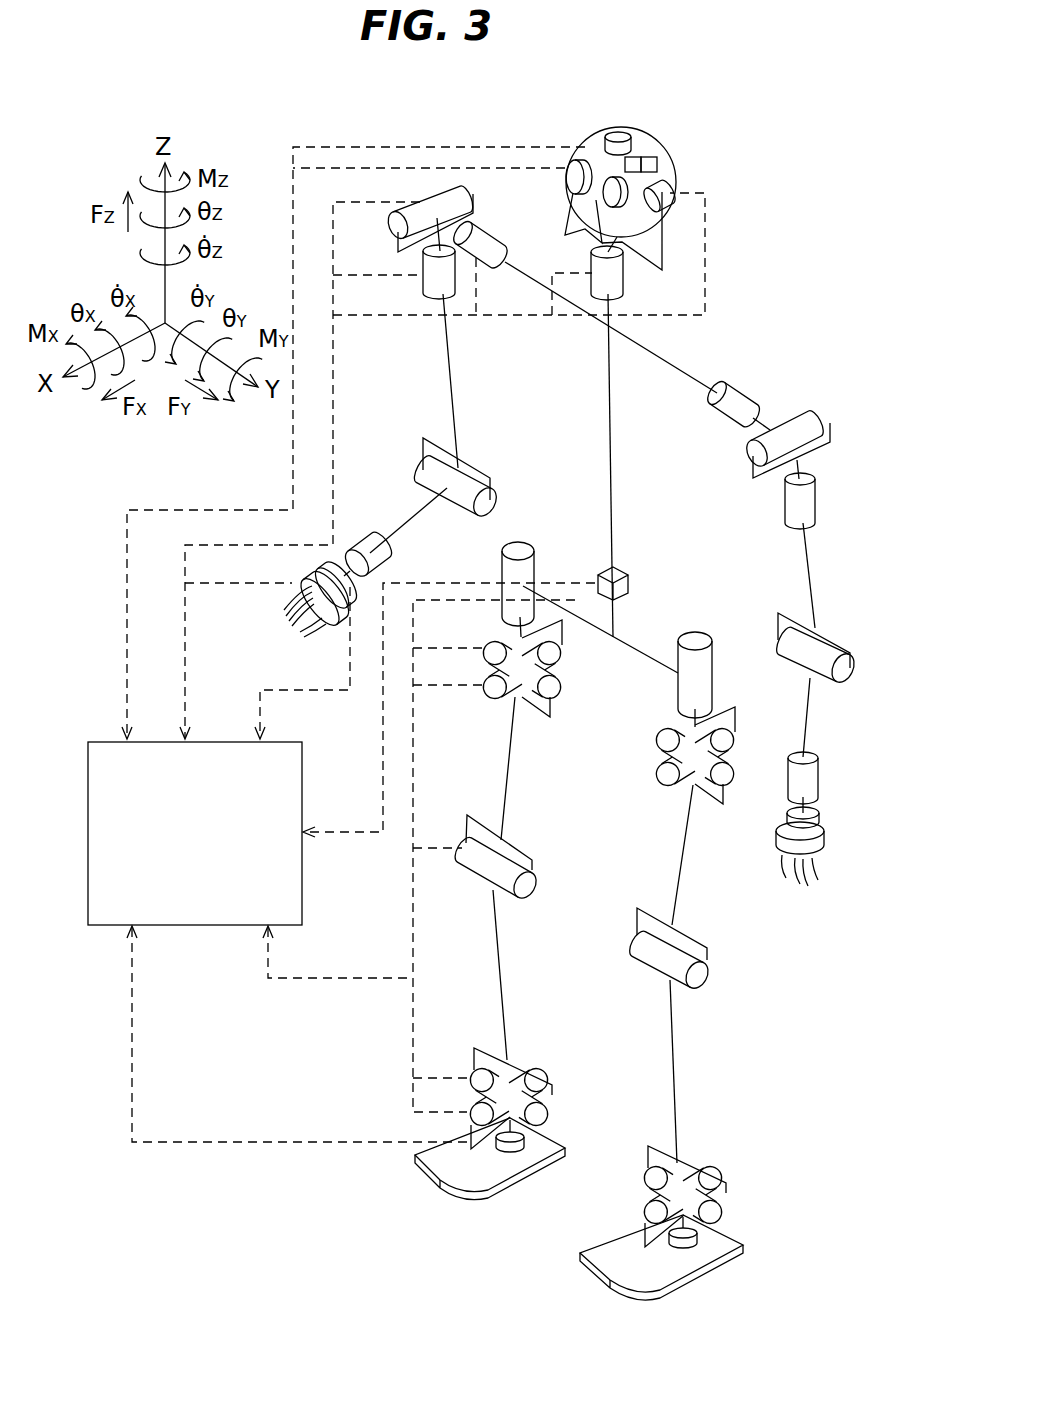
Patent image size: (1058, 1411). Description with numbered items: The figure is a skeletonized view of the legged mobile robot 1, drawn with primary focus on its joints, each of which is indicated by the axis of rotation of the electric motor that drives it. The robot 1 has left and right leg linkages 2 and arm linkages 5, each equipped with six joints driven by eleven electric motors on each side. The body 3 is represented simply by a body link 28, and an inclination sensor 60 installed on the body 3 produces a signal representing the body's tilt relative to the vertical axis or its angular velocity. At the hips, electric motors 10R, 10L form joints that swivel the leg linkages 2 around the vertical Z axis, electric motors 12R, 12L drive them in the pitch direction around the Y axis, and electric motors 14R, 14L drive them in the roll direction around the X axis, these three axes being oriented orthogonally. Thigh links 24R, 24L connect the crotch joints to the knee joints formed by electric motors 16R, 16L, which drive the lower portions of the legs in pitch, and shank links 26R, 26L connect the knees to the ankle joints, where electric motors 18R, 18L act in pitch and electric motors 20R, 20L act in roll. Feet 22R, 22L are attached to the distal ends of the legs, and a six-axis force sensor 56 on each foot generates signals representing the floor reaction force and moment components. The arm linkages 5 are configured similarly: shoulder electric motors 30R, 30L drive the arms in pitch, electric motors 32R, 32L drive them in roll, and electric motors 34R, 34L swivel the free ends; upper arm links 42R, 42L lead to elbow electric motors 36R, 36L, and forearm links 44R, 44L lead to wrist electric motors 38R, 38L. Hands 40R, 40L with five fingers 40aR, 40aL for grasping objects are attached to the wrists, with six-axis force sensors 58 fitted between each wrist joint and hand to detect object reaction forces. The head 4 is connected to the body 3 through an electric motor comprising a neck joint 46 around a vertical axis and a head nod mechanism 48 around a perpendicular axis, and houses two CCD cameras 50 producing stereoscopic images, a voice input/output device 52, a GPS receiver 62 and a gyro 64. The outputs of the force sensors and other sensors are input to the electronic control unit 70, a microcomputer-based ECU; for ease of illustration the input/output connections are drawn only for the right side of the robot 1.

The robot 1 is at (762, 313).
The leg linkages 2 is at (726, 917).
The body 3 is at (630, 447).
The head 4 is at (582, 132).
The arm linkages 5 is at (838, 609).
The electric motor 10R is at (520, 547).
The electric motor 10L is at (702, 656).
The electric motor 12R is at (495, 650).
The electric motor 12L is at (728, 780).
The electric motor 14R is at (496, 702).
The electric motor 14L is at (722, 742).
The electric motor 16R is at (534, 886).
The electric motor 16L is at (704, 976).
The electric motor 18R is at (548, 1110).
The electric motor 18L is at (726, 1198).
The electric motor 20R is at (522, 1070).
The electric motor 20L is at (700, 1170).
The foot 22R is at (480, 1178).
The foot 22L is at (742, 1241).
The thigh link 24R is at (512, 800).
The thigh link 24L is at (686, 866).
The shank link 26R is at (498, 960).
The shank link 26L is at (677, 1060).
The body link 28 is at (615, 520).
The electric motor 30R is at (488, 240).
The electric motor 30L is at (731, 385).
The electric motor 32R is at (455, 200).
The electric motor 32L is at (801, 421).
The electric motor 34R is at (426, 285).
The electric motor 34L is at (816, 507).
The electric motor 36R is at (492, 481).
The electric motor 36L is at (849, 662).
The electric motor 38R is at (386, 550).
The electric motor 38L is at (818, 778).
The hand 40R is at (330, 616).
The hand 40L is at (826, 840).
The fingers 40aR is at (285, 615).
The fingers 40aL is at (826, 884).
The upper arm link 42R is at (458, 398).
The upper arm link 42L is at (811, 556).
The forearm link 44R is at (416, 514).
The forearm link 44L is at (809, 727).
The electric motor (neck joint) 46 is at (618, 280).
The head nod mechanism 48 is at (668, 198).
The CCD cameras 50 is at (588, 212).
The voice input/output device 52 is at (617, 132).
The six-axis force sensor 56 is at (516, 1147).
The six-axis force sensor 58 is at (322, 584).
The inclination sensor 60 is at (630, 580).
The GPS receiver 62 is at (636, 157).
The gyro 64 is at (652, 158).
The electronic control unit (ECU) 70 is at (98, 742).